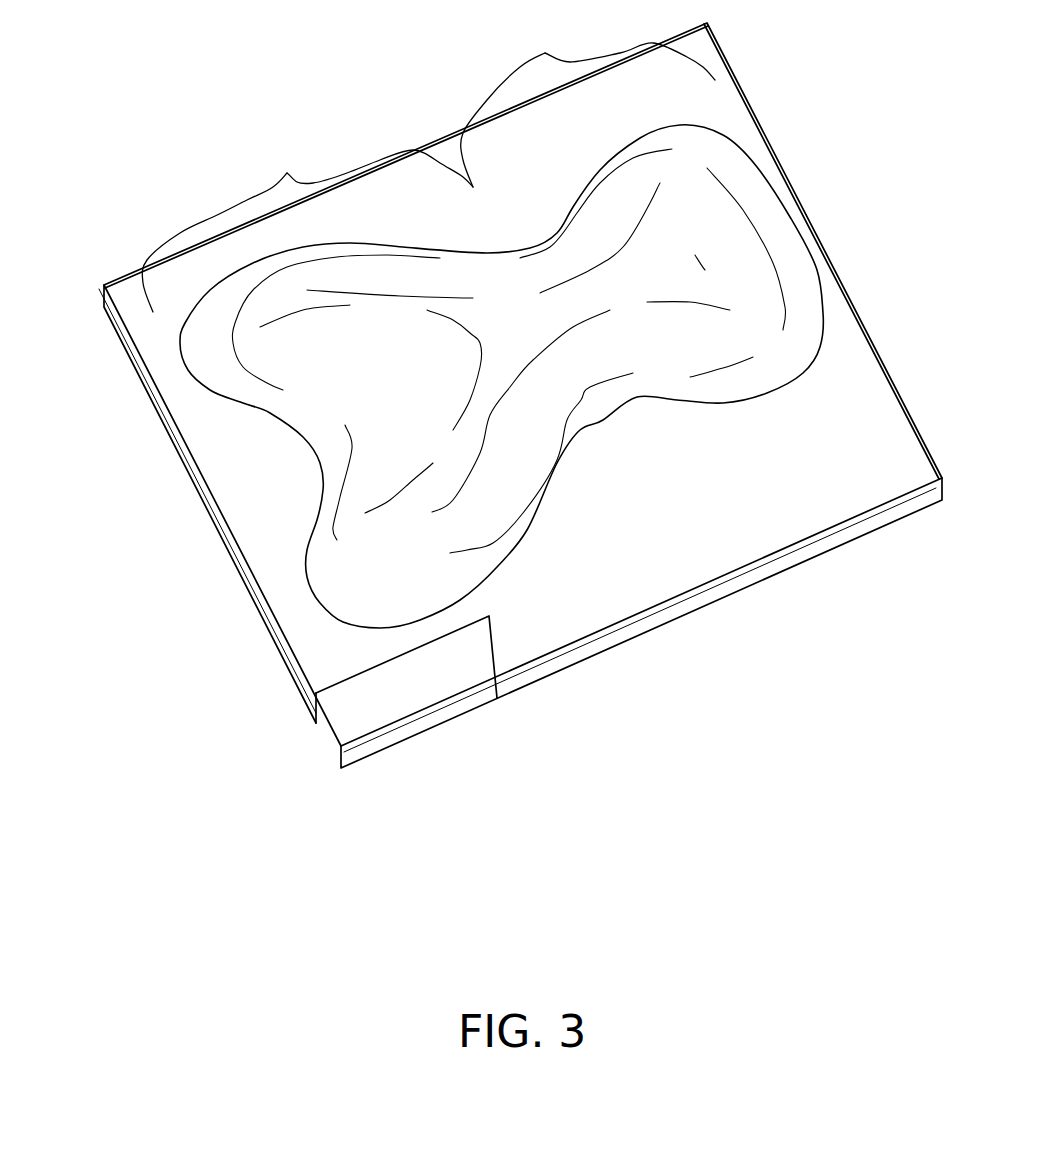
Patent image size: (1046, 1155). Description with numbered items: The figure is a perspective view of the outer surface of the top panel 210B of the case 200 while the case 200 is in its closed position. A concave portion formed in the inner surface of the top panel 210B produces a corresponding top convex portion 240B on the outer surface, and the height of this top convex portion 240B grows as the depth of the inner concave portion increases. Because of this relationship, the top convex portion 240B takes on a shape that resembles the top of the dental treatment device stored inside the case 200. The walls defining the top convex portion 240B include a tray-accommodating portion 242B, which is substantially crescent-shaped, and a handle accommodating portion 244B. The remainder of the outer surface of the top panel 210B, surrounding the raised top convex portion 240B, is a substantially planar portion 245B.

The case 200 is at (90, 186).
The top panel 210B is at (728, 502).
The top convex portion 240B is at (412, 593).
The tray-accommodating portion 242B is at (307, 229).
The handle accommodating portion 244B is at (588, 108).
The substantially planar portion 245B is at (292, 499).